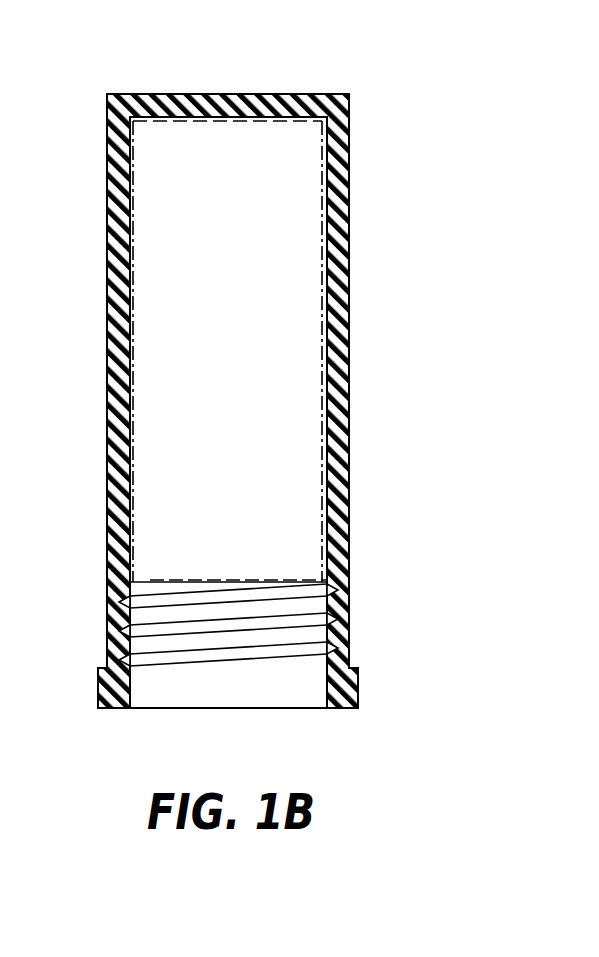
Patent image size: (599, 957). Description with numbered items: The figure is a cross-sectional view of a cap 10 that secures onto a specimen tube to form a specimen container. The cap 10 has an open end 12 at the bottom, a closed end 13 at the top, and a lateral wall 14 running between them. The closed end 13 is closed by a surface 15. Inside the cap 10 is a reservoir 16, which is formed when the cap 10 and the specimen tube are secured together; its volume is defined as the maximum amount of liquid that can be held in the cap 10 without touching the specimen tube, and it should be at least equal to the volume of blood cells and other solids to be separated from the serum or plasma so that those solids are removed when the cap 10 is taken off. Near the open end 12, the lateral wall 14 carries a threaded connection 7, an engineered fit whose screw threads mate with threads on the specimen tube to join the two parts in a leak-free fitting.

The cap 10 is at (378, 176).
The closed end 13 is at (235, 94).
The lateral wall 14 is at (349, 385).
The surface 15 is at (172, 115).
The reservoir 16 is at (130, 202).
The threaded connection 7 is at (307, 651).
The open end 12 is at (291, 709).